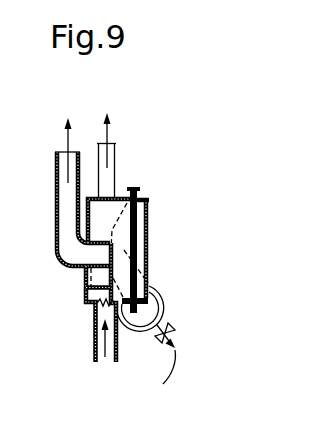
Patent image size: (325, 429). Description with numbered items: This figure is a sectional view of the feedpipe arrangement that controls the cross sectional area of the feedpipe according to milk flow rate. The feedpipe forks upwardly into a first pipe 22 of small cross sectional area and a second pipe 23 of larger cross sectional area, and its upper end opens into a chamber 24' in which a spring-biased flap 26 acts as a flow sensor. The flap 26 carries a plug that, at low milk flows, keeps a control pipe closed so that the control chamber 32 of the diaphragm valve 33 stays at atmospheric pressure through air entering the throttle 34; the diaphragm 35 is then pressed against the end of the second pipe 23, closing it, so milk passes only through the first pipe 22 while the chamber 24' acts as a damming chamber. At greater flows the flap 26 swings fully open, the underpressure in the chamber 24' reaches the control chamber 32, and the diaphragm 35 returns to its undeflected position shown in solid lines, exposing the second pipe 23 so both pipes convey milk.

The first pipe 22 is at (108, 182).
The second pipe 23 is at (70, 198).
The chamber 24' is at (150, 220).
The flap 26 is at (83, 290).
The control chamber 32 is at (138, 237).
The diaphragm valve 33 is at (148, 255).
The throttle 34 is at (177, 331).
The diaphragm 35 is at (150, 208).